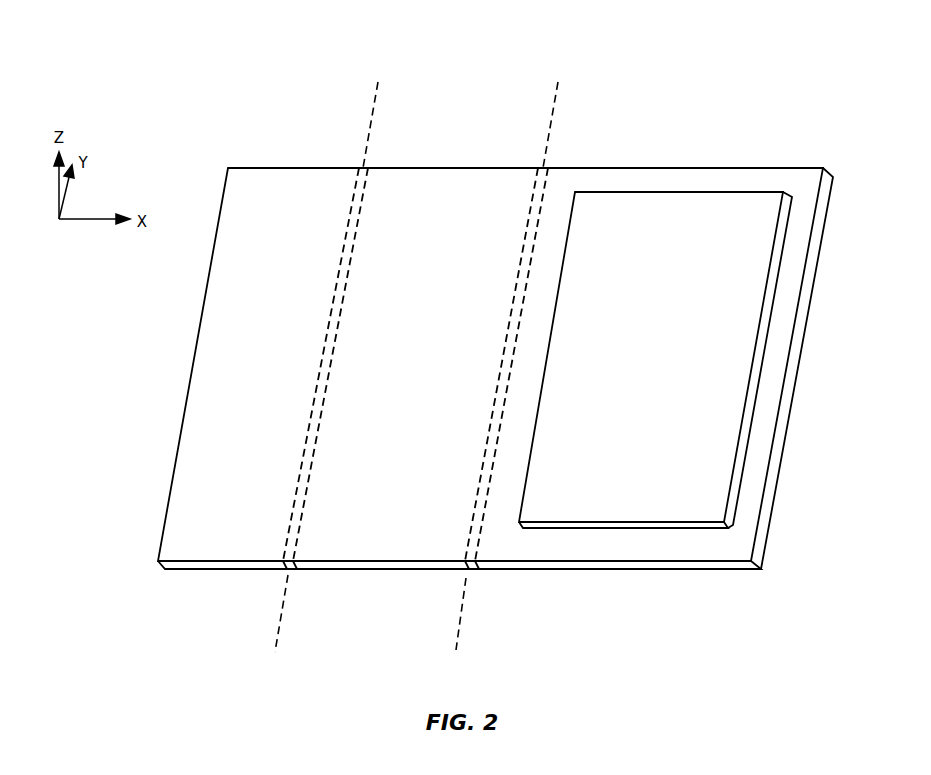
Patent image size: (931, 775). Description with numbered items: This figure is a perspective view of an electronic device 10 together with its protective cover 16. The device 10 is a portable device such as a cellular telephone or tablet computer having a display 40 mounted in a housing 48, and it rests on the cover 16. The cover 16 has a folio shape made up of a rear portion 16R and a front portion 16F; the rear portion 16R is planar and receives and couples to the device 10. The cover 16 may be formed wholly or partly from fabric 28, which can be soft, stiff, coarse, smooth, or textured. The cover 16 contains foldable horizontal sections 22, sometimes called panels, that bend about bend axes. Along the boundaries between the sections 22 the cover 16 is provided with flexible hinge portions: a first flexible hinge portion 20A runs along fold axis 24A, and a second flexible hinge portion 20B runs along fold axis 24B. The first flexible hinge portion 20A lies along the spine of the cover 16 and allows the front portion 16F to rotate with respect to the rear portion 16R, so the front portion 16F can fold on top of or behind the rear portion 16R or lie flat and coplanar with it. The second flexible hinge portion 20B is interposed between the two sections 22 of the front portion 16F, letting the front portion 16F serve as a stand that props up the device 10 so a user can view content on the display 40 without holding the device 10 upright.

The electronic device 10 is at (771, 190).
The cover 16 is at (671, 168).
The front portion 16F is at (220, 72).
The rear portion 16R is at (561, 72).
The first flexible hinge portion 20A is at (500, 382).
The second flexible hinge portion 20B is at (333, 318).
The sections 22 is at (223, 153).
The fold axis 24A is at (463, 618).
The fold axis 24B is at (281, 617).
The fabric 28 is at (200, 548).
The display 40 is at (728, 387).
The housing 48 is at (767, 298).